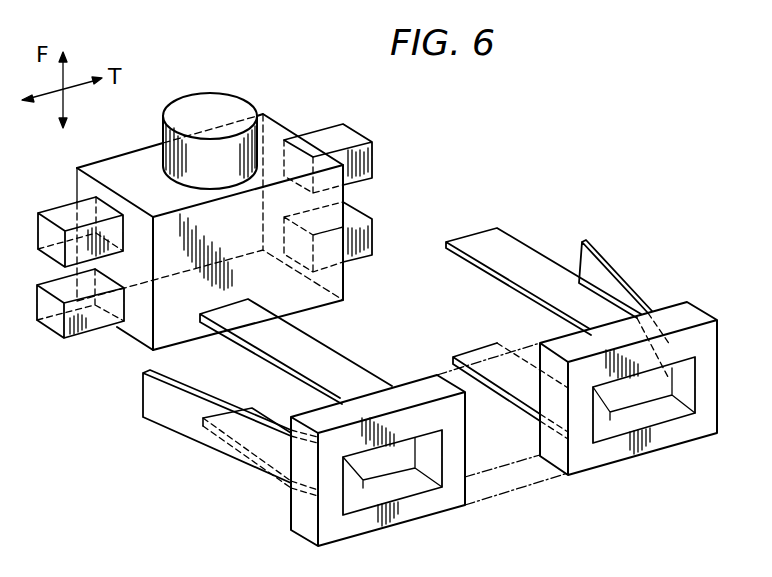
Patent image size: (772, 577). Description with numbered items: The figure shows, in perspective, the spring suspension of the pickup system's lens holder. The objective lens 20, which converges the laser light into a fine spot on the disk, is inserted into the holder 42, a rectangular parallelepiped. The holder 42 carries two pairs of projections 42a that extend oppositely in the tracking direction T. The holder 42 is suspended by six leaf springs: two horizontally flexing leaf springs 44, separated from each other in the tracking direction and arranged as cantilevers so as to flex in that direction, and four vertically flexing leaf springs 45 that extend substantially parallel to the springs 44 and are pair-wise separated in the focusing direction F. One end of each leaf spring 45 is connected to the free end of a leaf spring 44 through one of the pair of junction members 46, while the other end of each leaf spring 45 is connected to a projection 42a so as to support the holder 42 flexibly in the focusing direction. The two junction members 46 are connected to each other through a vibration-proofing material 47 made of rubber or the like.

The objective lens 20 is at (213, 105).
The holder 42 is at (137, 165).
The projections 42a is at (60, 210).
The horizontally flexing leaf springs 44 is at (173, 422).
The vertically flexing leaf springs 45 is at (340, 363).
The junction members 46 is at (438, 503).
The vibration-proofing material 47 is at (513, 452).